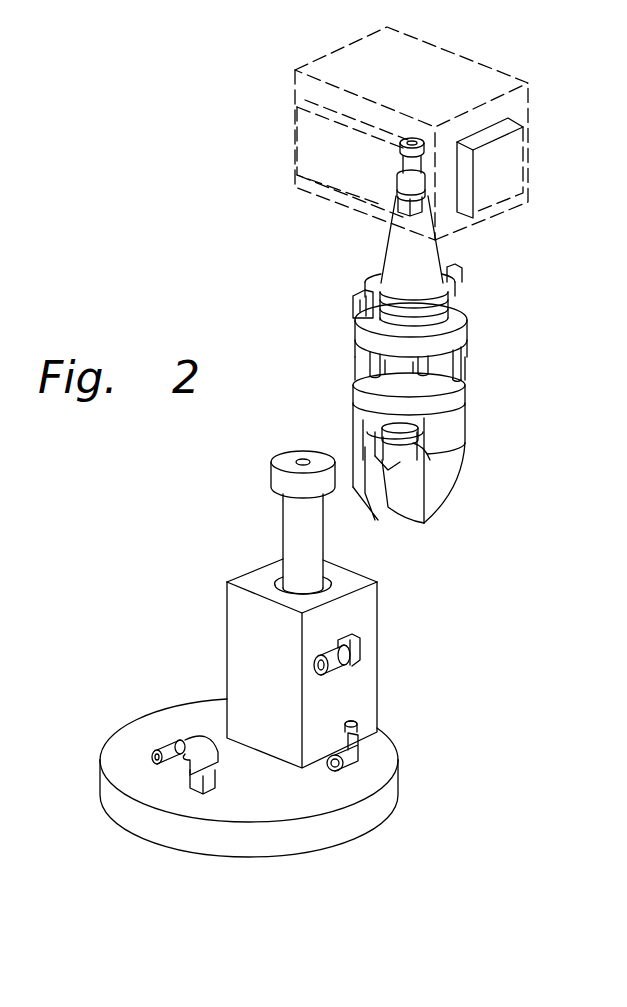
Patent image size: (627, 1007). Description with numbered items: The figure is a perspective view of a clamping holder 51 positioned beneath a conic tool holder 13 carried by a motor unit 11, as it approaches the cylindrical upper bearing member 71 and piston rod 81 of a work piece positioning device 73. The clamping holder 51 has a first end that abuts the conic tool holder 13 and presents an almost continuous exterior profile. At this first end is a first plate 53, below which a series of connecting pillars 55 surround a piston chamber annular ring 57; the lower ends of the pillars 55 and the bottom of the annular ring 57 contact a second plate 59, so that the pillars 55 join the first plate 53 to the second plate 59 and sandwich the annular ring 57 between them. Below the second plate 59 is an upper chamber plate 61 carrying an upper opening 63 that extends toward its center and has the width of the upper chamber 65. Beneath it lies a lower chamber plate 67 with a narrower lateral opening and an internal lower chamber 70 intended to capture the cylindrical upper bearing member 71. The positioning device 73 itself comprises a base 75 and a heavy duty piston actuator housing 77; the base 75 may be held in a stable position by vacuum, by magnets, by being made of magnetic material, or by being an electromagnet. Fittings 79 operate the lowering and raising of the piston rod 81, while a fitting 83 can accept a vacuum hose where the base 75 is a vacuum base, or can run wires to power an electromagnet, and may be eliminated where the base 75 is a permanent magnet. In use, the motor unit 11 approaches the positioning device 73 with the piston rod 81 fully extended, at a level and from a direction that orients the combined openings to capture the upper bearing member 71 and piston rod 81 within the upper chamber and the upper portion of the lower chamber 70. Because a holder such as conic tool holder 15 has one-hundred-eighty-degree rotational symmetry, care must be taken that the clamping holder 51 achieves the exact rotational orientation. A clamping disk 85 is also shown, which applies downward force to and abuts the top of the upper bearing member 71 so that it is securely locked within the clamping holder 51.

The motor unit 11 is at (486, 70).
The conic tool holder 13 is at (389, 243).
The conic tool holder 15 is at (358, 298).
The clamping holder 51 is at (492, 442).
The first plate 53 is at (467, 331).
The connecting pillars 55 is at (355, 357).
The piston chamber annular ring 57 is at (398, 375).
The second plate 59 is at (465, 388).
The upper chamber plate 61 is at (465, 421).
The upper opening 63 is at (368, 427).
The upper chamber 65 is at (362, 437).
The lower chamber plate 67 is at (465, 475).
The lower chamber 70 is at (383, 440).
The cylindrical upper bearing member 71 is at (271, 472).
The work piece positioning device 73 is at (393, 817).
The base 75 is at (153, 720).
The heavy duty piston actuator housing 77 is at (282, 692).
The fittings 79 is at (348, 644).
The piston rod 81 is at (283, 527).
The fitting 83 is at (200, 733).
The clamping disk 85 is at (413, 443).